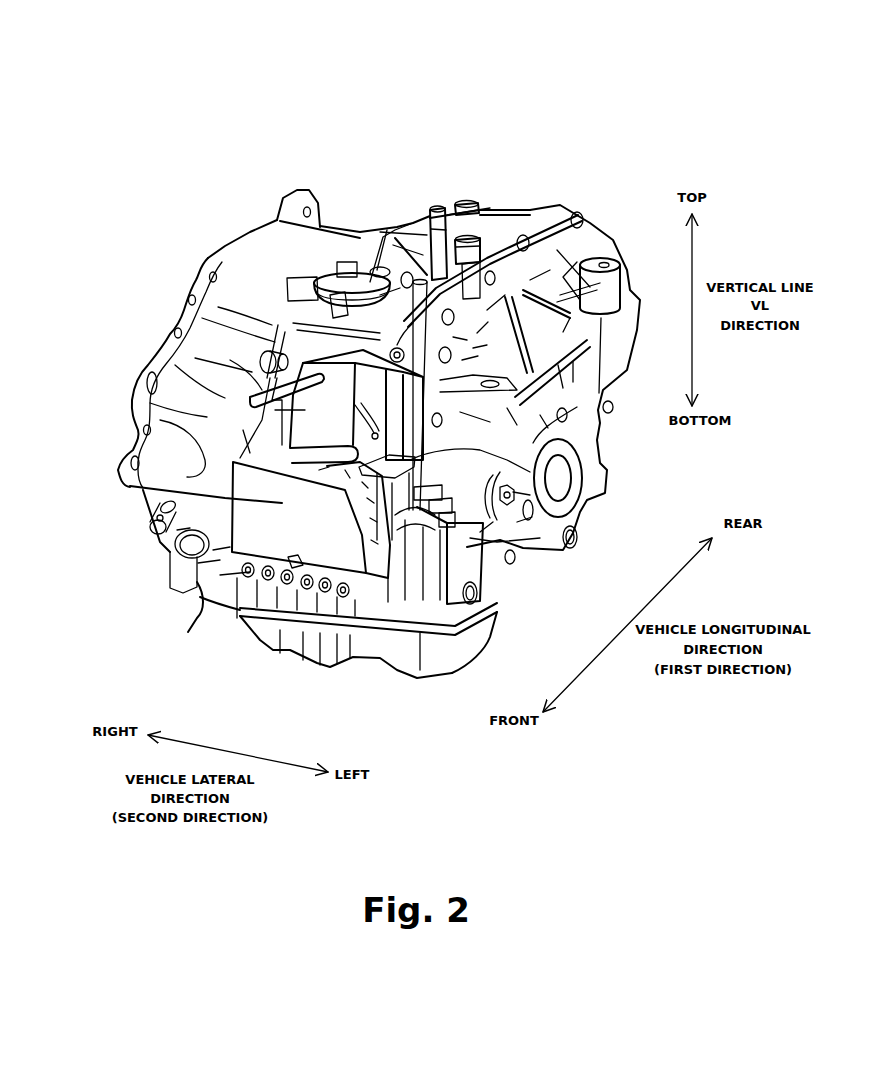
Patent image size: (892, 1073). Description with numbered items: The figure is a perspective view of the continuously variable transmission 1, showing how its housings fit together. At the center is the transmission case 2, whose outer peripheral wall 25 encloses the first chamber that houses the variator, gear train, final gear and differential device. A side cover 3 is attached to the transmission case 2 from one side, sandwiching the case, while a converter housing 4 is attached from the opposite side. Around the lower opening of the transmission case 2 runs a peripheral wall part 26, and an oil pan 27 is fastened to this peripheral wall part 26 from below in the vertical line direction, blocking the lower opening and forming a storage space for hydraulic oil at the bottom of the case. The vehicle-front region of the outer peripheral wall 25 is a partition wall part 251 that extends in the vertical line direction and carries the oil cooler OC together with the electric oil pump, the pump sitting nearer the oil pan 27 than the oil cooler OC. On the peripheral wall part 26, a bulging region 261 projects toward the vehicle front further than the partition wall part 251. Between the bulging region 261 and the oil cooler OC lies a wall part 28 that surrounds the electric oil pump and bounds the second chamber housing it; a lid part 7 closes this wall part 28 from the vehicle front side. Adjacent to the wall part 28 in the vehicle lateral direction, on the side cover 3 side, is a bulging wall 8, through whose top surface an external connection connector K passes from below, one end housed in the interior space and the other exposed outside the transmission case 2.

The continuously variable transmission 1 is at (552, 82).
The transmission case 2 is at (452, 200).
The side cover 3 is at (597, 213).
The converter housing 4 is at (337, 213).
The lid part 7 is at (253, 535).
The bulging wall 8 is at (467, 550).
The outer peripheral wall 25 is at (498, 213).
The partition wall part 251 is at (598, 390).
The peripheral wall part 26 is at (377, 603).
The bulging region 261 is at (312, 575).
The oil pan 27 is at (457, 677).
The wall part 28 is at (527, 455).
The external connection connector K is at (445, 493).
The oil cooler OC is at (255, 365).